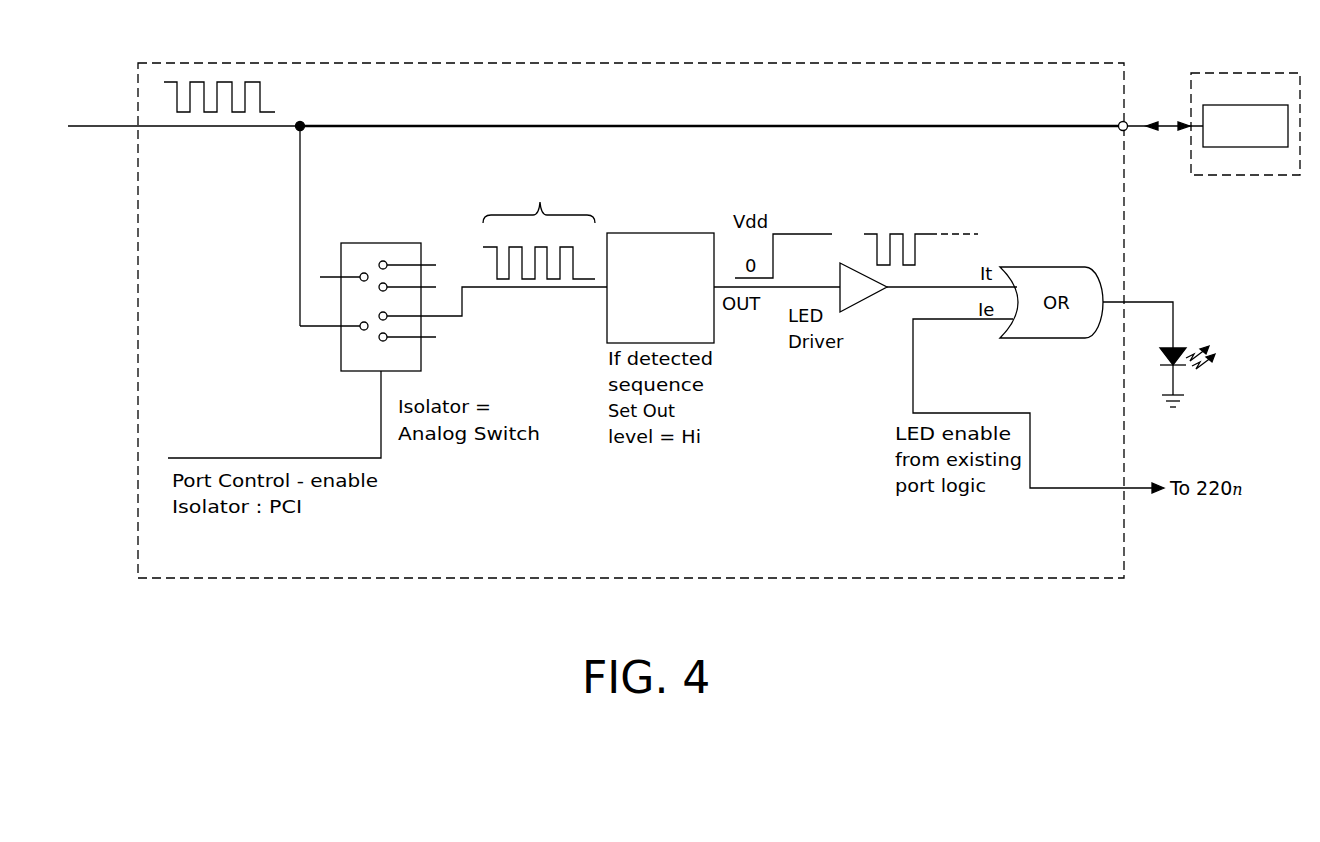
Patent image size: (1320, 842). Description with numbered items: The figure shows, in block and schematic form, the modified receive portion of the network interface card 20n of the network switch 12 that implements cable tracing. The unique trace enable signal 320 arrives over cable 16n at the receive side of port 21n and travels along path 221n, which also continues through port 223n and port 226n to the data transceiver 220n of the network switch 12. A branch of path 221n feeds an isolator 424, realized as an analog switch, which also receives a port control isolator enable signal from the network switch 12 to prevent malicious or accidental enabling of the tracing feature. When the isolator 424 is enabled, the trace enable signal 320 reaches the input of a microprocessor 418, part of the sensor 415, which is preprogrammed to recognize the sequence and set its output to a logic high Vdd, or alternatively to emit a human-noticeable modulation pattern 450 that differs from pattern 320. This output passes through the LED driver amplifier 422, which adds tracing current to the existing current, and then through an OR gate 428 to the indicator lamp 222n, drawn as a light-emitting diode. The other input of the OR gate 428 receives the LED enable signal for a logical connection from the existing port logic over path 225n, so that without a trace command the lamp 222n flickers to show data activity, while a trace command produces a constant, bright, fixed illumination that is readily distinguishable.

The network switch 12 is at (1225, 73).
The cable path 16n is at (101, 125).
The network interface card 20n is at (695, 578).
The port 21n is at (136, 127).
The data transceiver 220n is at (1245, 126).
The path 221n is at (481, 126).
The indicator lamp 222n is at (1180, 367).
The port 223n is at (1122, 122).
The path 225n is at (913, 392).
The port 226n is at (1203, 127).
The unique trace enable signal 320 is at (539, 228).
The sensor 415 is at (682, 172).
The microprocessor 418 is at (640, 233).
The LED driver amplifier 422 is at (860, 297).
The isolator 424 is at (376, 243).
The OR gate 428 is at (1033, 267).
The modulation pattern 450 is at (893, 234).